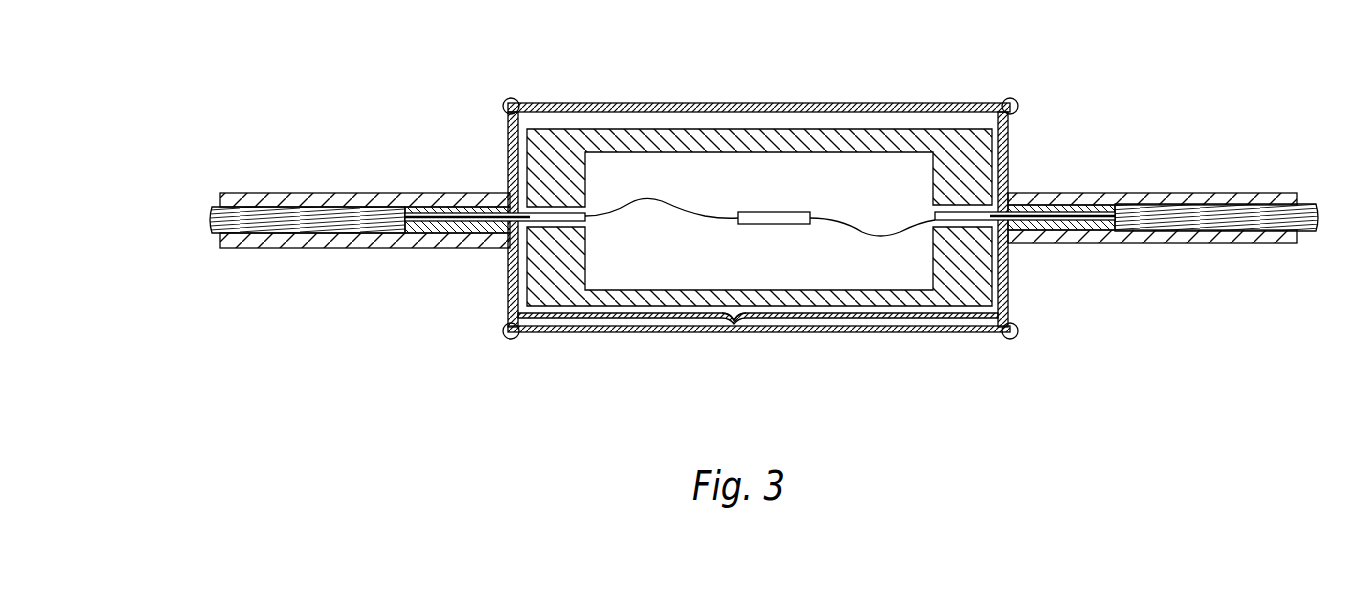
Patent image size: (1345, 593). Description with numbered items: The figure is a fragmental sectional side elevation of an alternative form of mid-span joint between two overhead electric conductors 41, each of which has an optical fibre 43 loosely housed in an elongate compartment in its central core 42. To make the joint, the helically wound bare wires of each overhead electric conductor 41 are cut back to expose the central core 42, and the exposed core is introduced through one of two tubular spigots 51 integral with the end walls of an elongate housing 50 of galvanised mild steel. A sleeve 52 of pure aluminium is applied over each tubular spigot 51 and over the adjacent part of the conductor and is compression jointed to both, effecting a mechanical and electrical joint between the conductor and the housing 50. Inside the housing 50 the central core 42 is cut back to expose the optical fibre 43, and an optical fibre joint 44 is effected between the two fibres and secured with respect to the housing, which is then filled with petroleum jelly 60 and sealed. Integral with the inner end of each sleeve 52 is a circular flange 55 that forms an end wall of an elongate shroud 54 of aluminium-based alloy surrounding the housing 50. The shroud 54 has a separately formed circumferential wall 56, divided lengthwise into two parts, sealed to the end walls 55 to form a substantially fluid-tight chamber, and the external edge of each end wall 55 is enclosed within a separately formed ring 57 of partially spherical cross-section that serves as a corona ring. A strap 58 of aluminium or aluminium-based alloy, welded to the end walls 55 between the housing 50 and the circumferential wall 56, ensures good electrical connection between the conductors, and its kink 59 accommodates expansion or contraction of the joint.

The overhead electric conductor 41 is at (213, 208).
The central core 42 is at (455, 230).
The optical fibre 43 is at (648, 200).
The optical fibre joint 44 is at (781, 214).
The elongate housing 50 is at (651, 130).
The tubular spigot 51 is at (450, 212).
The sleeve 52 is at (340, 195).
The elongate shroud 54 is at (782, 84).
The circular flange 55 is at (1008, 150).
The circumferential wall 56 is at (760, 195).
The ring 57 is at (503, 103).
The strap 58 is at (607, 318).
The kink 59 is at (737, 324).
The petroleum jelly 60 is at (866, 265).